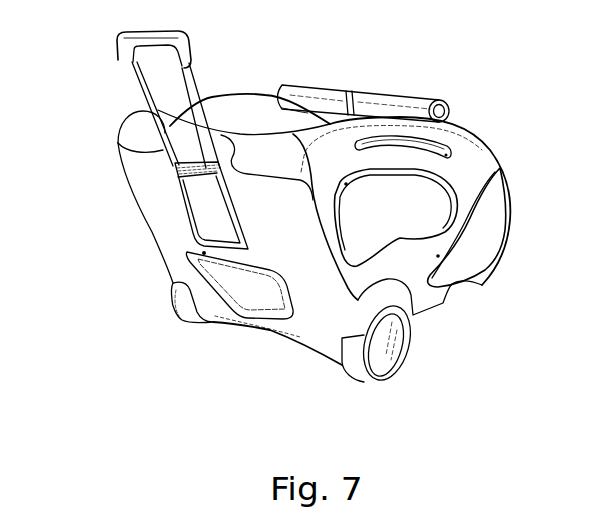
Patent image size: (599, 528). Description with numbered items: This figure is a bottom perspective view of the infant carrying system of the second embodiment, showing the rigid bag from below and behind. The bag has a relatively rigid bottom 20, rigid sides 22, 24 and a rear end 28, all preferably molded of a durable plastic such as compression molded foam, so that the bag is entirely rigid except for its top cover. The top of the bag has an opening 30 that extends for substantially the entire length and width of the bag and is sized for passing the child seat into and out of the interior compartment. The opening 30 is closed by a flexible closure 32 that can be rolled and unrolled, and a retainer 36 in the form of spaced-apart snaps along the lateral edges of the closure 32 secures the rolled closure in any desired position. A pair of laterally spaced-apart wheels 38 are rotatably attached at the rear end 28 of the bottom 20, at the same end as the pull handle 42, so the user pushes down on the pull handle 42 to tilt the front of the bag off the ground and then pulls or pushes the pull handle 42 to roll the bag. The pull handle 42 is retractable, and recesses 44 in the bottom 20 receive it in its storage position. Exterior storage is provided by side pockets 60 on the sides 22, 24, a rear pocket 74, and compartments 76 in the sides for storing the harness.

The bottom 20 is at (312, 328).
The side 22 is at (499, 167).
The side 24 is at (210, 97).
The rear end 28 is at (130, 130).
The opening 30 is at (247, 95).
The closure 32 is at (405, 101).
The retainer 36 is at (352, 93).
The wheels 38 is at (183, 308).
The pull handle 42 is at (133, 79).
The recesses 44 is at (193, 157).
The side pockets 60 is at (448, 192).
The rear pocket 74 is at (247, 300).
The compartments 76 is at (444, 148).